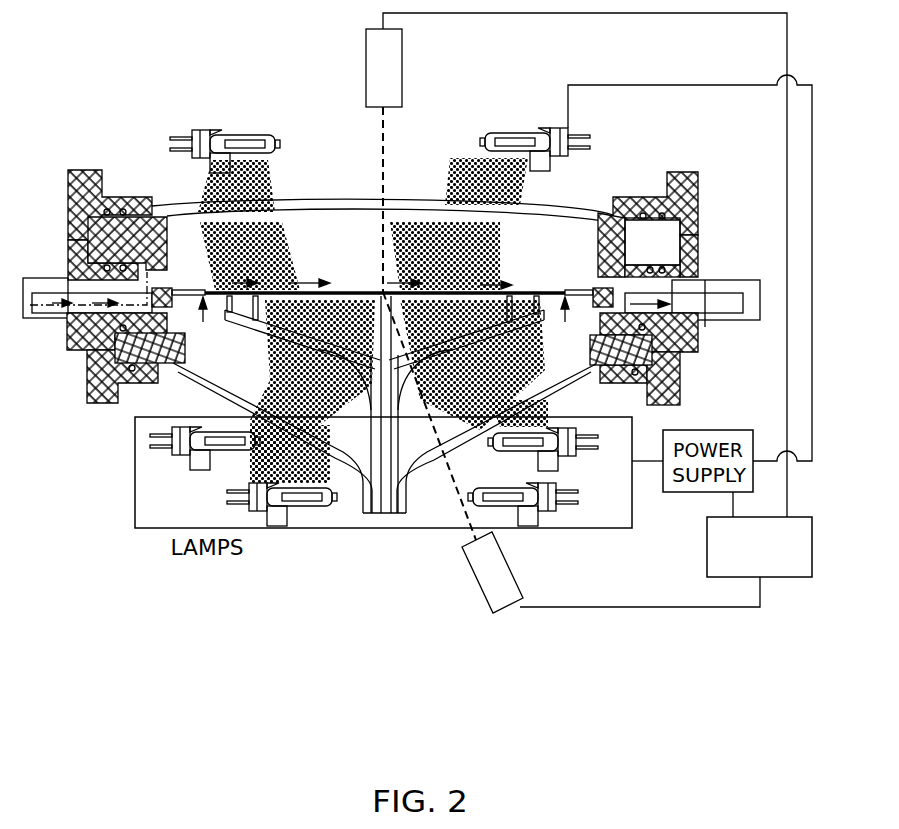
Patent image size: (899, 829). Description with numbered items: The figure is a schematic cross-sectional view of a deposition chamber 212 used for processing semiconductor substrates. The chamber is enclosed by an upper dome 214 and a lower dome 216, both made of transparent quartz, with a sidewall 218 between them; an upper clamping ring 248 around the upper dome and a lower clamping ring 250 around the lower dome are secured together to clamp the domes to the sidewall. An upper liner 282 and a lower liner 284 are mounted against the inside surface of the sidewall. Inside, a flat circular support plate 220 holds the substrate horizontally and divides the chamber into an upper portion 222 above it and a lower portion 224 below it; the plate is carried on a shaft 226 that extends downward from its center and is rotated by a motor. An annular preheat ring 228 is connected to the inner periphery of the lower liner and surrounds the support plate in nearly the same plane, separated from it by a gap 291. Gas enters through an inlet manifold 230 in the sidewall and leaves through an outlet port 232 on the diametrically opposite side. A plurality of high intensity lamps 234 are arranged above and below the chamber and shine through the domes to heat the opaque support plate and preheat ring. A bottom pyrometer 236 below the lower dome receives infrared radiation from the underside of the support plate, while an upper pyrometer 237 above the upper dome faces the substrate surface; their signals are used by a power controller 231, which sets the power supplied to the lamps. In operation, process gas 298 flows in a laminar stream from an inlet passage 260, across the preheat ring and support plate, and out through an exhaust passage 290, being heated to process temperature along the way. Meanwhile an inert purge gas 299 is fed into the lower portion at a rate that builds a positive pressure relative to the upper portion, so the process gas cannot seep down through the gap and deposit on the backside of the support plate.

The deposition chamber 212 is at (258, 90).
The upper dome 214 is at (427, 200).
The lower dome 216 is at (217, 395).
The sidewall 218 is at (68, 247).
The support plate 220 is at (290, 290).
The upper portion 222 is at (447, 238).
The lower portion 224 is at (448, 397).
The shaft 226 is at (368, 406).
The preheat ring 228 is at (185, 292).
The inlet manifold 230 is at (42, 322).
The power controller 231 is at (787, 580).
The outlet port 232 is at (720, 326).
The lamps 234 is at (243, 135).
The bottom pyrometer 236 is at (487, 574).
The upper pyrometer 237 is at (393, 45).
The upper clamping ring 248 is at (85, 170).
The lower clamping ring 250 is at (100, 403).
The inlet passage 260 is at (93, 297).
The upper liner 282 is at (167, 247).
The lower liner 284 is at (163, 350).
The exhaust passage 290 is at (622, 308).
The gap 291 is at (207, 290).
The process gas 298 is at (232, 283).
The inert purge gas 299 is at (205, 322).